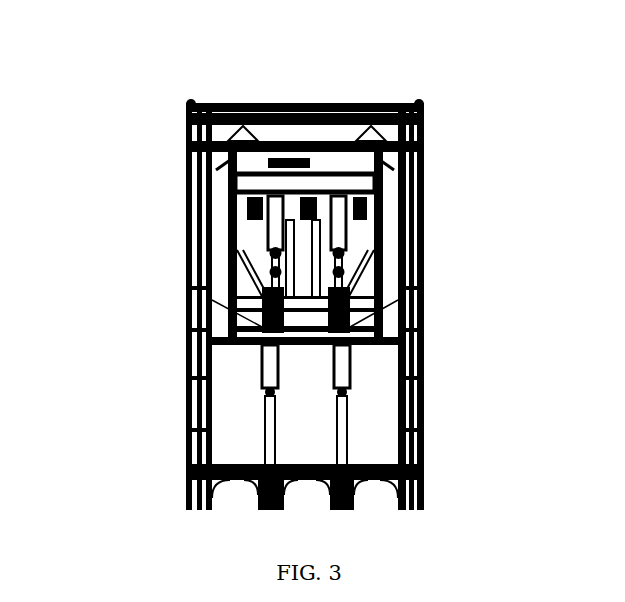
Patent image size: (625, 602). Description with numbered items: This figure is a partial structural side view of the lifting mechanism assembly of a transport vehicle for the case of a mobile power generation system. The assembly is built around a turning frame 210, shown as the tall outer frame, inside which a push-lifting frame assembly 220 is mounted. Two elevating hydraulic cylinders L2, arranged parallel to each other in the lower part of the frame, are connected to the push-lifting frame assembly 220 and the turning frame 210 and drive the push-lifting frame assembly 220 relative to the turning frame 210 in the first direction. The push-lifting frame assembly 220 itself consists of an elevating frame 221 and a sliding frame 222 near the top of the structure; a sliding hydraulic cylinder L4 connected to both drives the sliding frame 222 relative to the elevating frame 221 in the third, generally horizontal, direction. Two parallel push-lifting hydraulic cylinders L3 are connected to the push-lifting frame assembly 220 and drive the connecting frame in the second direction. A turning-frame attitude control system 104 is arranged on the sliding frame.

The turning frame 210 is at (190, 410).
The push-lifting frame assembly 220 is at (367, 125).
The elevating frame 221 is at (430, 152).
The sliding frame 222 is at (430, 133).
The push-lifting hydraulic cylinder L3 is at (430, 178).
The sliding hydraulic cylinder L4 is at (312, 147).
The turning-frame attitude control system 104 is at (388, 302).
The elevating hydraulic cylinder L2 is at (270, 383).